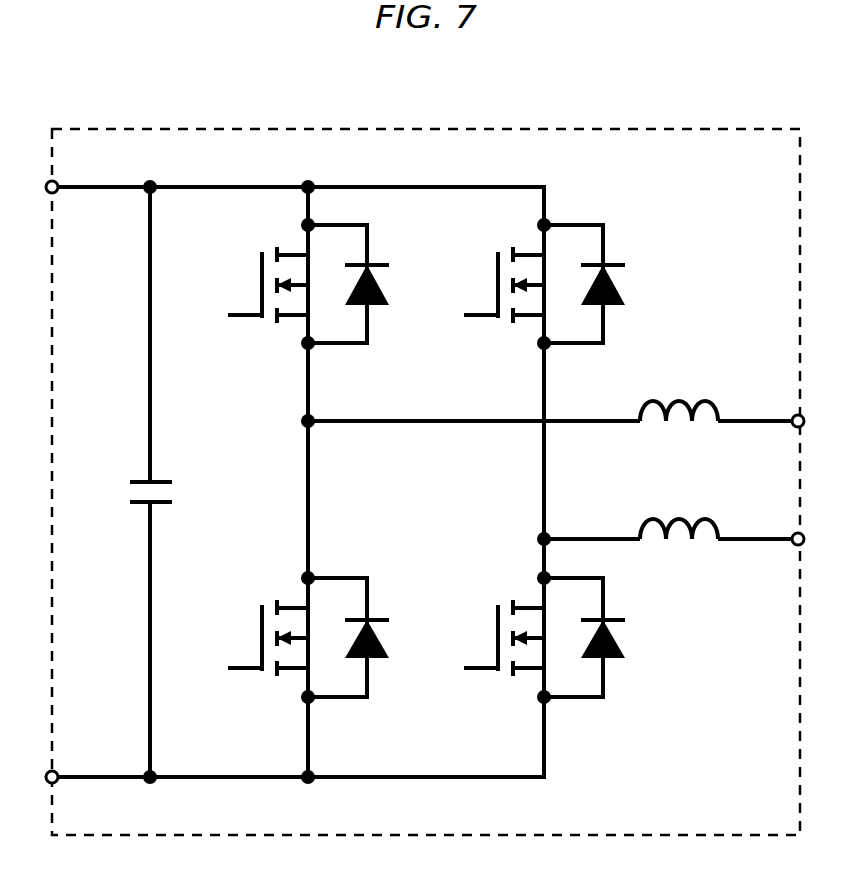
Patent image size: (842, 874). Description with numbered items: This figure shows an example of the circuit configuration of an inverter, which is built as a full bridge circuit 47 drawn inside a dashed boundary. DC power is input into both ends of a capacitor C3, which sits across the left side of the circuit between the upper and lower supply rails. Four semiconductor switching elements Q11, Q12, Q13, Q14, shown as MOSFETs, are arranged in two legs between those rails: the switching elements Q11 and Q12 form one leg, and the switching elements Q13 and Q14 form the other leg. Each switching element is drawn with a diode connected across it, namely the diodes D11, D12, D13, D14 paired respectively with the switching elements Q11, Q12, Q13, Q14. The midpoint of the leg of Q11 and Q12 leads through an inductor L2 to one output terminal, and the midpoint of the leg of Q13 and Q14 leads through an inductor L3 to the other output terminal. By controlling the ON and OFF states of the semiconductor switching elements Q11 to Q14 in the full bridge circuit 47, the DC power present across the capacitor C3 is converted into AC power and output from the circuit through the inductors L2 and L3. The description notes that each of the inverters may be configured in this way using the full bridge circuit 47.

The full bridge circuit 47 is at (638, 129).
The semiconductor switching element Q11 is at (262, 283).
The semiconductor switching element Q12 is at (262, 636).
The semiconductor switching element Q13 is at (498, 283).
The semiconductor switching element Q14 is at (498, 636).
The diode D11 is at (372, 306).
The diode D12 is at (372, 659).
The diode D13 is at (622, 290).
The diode D14 is at (620, 648).
The inductor (reactor) L2 is at (685, 402).
The inductor (reactor) L3 is at (685, 520).
The capacitor C3 is at (127, 493).